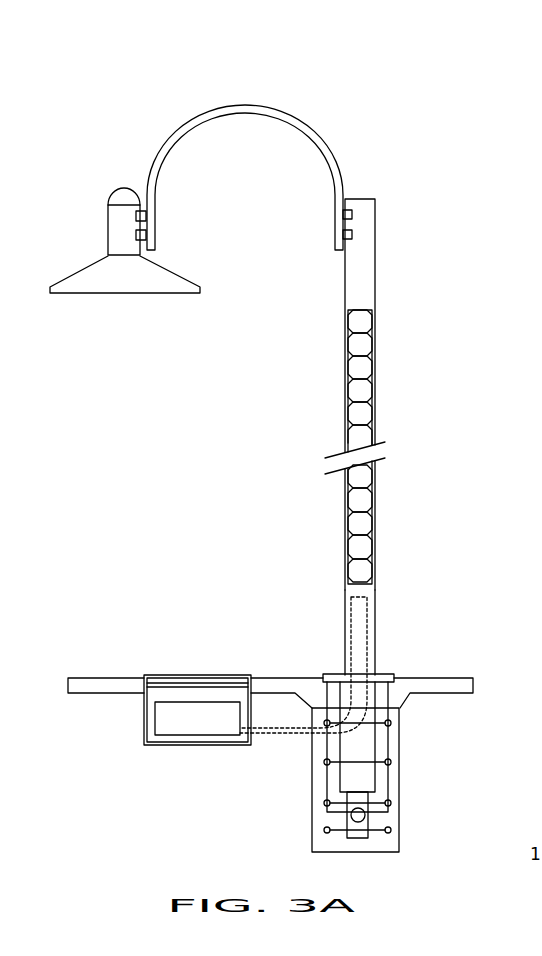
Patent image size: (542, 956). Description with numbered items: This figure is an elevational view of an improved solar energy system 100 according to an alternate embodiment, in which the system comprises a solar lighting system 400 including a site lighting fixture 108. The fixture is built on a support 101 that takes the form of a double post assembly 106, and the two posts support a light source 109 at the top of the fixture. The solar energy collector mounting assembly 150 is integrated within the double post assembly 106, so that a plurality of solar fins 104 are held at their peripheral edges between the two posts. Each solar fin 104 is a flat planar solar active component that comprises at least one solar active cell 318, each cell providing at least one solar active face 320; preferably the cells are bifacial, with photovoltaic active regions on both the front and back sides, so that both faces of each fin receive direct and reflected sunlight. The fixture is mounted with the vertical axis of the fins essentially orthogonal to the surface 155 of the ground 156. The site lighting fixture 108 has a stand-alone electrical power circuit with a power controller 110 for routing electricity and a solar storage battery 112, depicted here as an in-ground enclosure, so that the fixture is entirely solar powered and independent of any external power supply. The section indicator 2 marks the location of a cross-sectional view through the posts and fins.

The improved solar energy system 100 is at (347, 95).
The solar energy collector mounting assembly 150 is at (363, 123).
The solar lighting system 400 is at (382, 148).
The site lighting fixture 108 is at (400, 170).
The light source 109 is at (127, 293).
The solar fin 104 is at (345, 337).
The support 101 is at (345, 537).
The double post assembly 106 is at (345, 612).
The solar active cell 318 is at (370, 347).
The solar active face 320 is at (345, 431).
The section line 2- 2 is at (438, 480).
The power controller 110 is at (368, 642).
The surface of the ground 155 is at (125, 677).
The solar storage battery 112 is at (205, 725).
The ground 156 is at (233, 832).